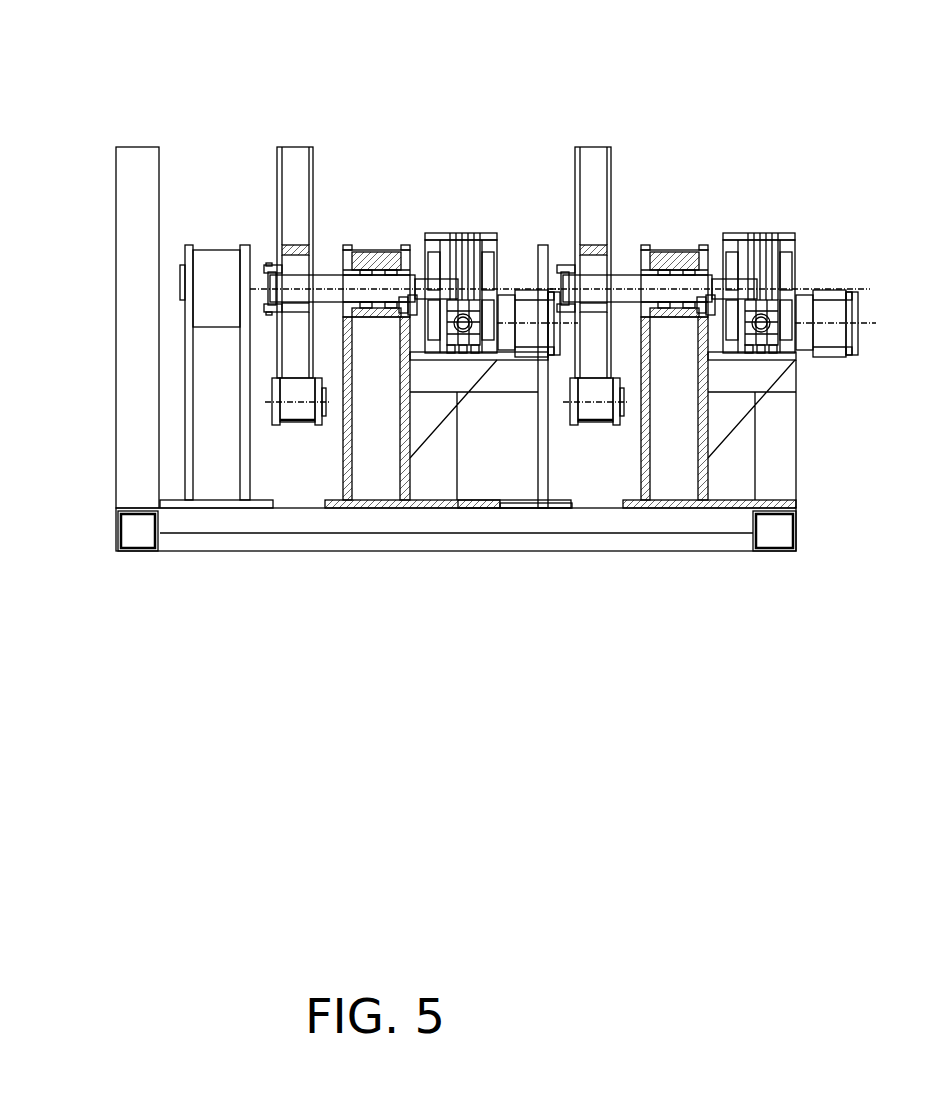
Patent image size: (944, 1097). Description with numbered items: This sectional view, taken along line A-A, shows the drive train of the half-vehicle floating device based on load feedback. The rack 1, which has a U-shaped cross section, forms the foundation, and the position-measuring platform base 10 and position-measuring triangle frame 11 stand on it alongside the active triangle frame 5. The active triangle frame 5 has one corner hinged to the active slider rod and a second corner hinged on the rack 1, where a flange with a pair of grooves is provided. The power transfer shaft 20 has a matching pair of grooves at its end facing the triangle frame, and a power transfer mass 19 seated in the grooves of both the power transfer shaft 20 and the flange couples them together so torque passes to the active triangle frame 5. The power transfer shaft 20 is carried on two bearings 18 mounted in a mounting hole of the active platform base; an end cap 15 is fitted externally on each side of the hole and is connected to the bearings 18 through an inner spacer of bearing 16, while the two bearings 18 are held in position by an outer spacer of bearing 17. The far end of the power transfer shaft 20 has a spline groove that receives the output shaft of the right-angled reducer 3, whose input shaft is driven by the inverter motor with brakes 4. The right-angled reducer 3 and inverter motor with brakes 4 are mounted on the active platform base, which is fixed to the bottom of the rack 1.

The rack 1 is at (135, 178).
The position-measuring platform base 10 is at (243, 252).
The position-measuring triangle frame 11 is at (313, 158).
The active triangle frame 5 is at (375, 247).
The right-angled reducer 3 is at (458, 237).
The inverter motor with brakes 4 is at (530, 303).
The power transfer shaft 20 is at (275, 279).
The power transfer mass 19 is at (276, 307).
The bearing 18 is at (360, 310).
The outer spacer of bearing 17 is at (370, 312).
The inner spacer of bearing 16 is at (400, 303).
The end cap 15 is at (410, 303).